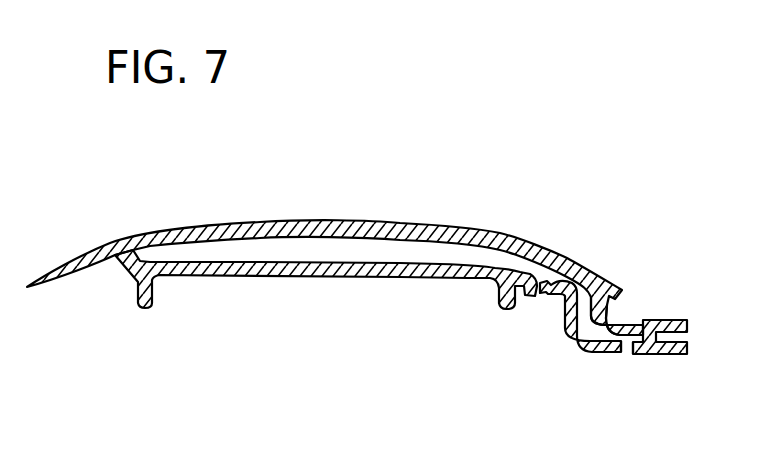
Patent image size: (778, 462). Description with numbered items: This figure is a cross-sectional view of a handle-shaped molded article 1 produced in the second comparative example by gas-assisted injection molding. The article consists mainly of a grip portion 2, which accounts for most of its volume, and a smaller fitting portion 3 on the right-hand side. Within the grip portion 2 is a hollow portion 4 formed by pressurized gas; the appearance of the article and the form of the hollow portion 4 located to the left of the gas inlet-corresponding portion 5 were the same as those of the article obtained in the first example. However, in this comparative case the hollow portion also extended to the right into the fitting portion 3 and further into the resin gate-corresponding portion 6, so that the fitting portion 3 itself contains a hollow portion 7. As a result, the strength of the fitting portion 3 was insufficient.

The handle-shaped molded article 1 is at (428, 200).
The grip portion 2 is at (241, 222).
The fitting portion 3 is at (652, 320).
The hollow portion 4 is at (297, 250).
The gas inlet-corresponding portion 5 is at (537, 297).
The resin gate-corresponding portion 6 is at (627, 347).
The hollow portion of the fitting portion 7 is at (583, 307).